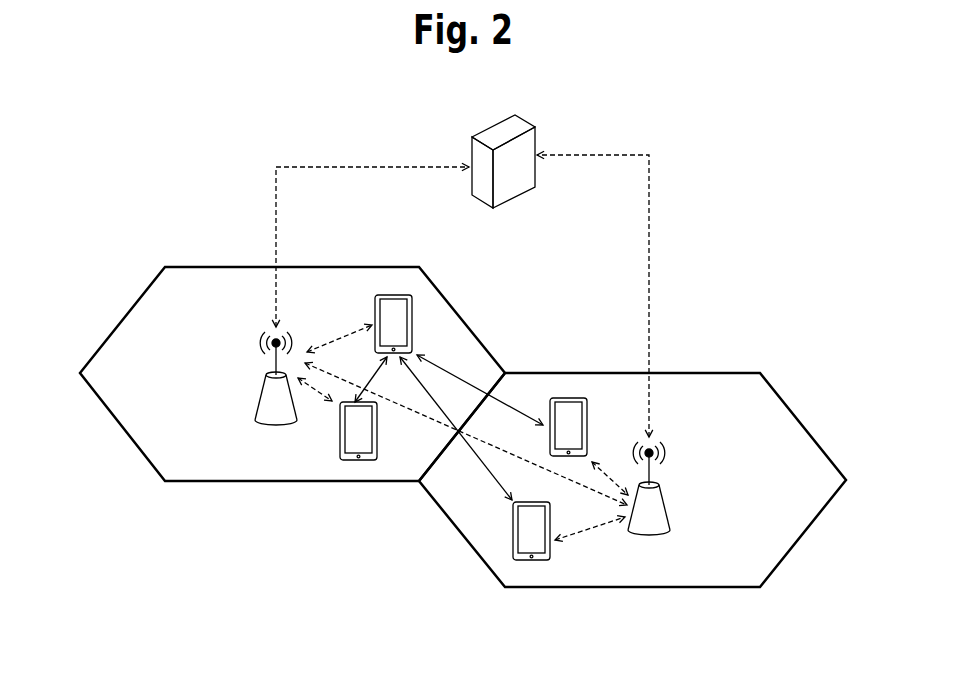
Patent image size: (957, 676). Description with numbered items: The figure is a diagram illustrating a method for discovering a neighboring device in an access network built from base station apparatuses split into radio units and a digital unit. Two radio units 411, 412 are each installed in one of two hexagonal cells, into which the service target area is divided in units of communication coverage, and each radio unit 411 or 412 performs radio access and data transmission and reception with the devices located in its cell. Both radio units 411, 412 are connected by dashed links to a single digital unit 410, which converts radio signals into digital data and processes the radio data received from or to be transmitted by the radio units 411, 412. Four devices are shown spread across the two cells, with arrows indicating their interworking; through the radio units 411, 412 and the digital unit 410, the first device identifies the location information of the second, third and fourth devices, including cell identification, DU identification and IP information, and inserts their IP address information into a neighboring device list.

The digital unit (DU) 410 is at (492, 127).
The radio unit (RU) 411 is at (258, 391).
The radio unit (RU) 412 is at (668, 508).